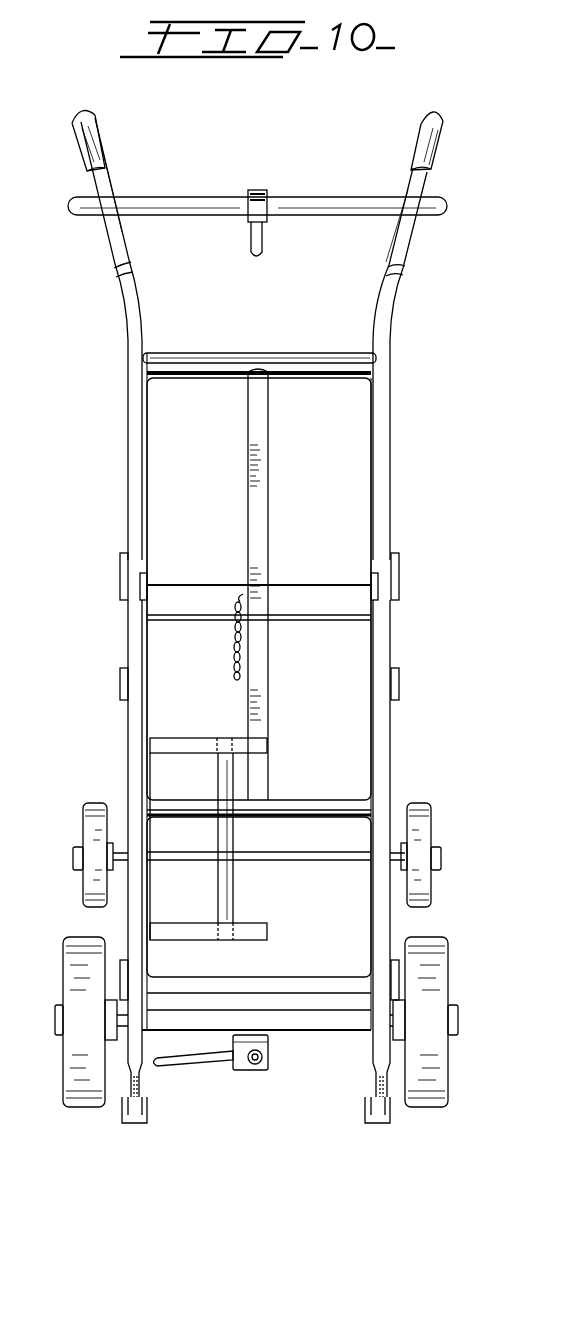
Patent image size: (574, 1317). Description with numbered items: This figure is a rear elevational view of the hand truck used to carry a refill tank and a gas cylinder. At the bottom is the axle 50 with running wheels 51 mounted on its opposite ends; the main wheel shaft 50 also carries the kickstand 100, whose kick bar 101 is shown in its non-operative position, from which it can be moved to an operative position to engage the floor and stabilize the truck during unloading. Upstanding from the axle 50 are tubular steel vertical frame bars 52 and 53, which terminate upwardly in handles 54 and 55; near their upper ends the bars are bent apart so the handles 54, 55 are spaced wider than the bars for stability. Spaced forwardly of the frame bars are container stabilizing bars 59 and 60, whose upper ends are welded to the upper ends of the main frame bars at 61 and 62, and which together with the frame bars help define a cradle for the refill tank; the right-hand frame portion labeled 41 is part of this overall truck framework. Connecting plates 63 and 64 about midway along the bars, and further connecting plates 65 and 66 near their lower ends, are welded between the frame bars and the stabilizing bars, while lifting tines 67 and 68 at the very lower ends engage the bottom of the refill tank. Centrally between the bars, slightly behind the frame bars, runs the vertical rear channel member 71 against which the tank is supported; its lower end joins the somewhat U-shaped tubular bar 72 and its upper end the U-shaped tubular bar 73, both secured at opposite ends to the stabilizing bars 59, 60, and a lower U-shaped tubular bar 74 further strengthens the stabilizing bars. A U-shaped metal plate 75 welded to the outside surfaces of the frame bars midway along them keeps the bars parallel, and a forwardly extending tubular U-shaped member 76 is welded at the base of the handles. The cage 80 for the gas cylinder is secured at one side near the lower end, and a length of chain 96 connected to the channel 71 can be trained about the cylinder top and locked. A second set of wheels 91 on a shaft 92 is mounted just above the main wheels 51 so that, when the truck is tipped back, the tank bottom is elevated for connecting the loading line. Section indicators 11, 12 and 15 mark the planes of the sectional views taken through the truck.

The frame 41 is at (392, 410).
The axle 50 is at (323, 1025).
The running wheels 51 is at (85, 1095).
The vertical frame bar 52 is at (392, 572).
The vertical frame bar 53 is at (128, 567).
The handle 54 is at (78, 148).
The handle 55 is at (425, 150).
The container stabilizing bar 59 is at (136, 435).
The container stabilizing bar 60 is at (380, 468).
The weld connection 61 is at (128, 268).
The weld connection 62 is at (398, 268).
The connecting plate 63 is at (120, 680).
The connecting plate 64 is at (398, 680).
The connecting plate 65 is at (120, 965).
The connecting plate 66 is at (398, 965).
The lifting tine 67 is at (127, 1115).
The lifting tine 68 is at (382, 1118).
The vertical rear channel member 71 is at (256, 490).
The tubular bar 72 is at (288, 808).
The U-shaped tubular bar 73 is at (285, 358).
The lower U-shaped tubular bar 74 is at (270, 985).
The U-shaped metal plate 75 is at (196, 593).
The tubular U-shaped member 76 is at (343, 200).
The cage 80 is at (200, 736).
The second set of wheels 91 is at (85, 830).
The shaft 92 is at (287, 860).
The chain 96 is at (235, 640).
The kickstand 100 is at (250, 1076).
The kick bar 101 is at (183, 1062).
The section line 11- 11 is at (262, 146).
The section line 12- 12 is at (189, 721).
The section line 15- 15 is at (248, 1099).